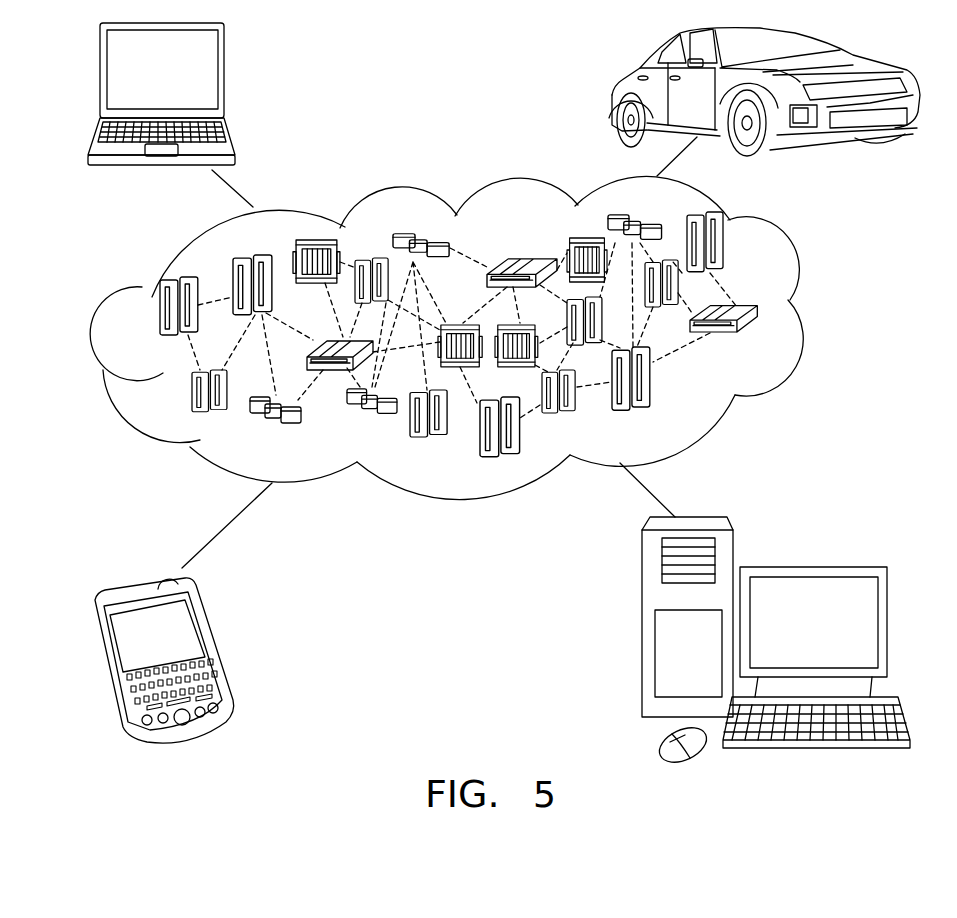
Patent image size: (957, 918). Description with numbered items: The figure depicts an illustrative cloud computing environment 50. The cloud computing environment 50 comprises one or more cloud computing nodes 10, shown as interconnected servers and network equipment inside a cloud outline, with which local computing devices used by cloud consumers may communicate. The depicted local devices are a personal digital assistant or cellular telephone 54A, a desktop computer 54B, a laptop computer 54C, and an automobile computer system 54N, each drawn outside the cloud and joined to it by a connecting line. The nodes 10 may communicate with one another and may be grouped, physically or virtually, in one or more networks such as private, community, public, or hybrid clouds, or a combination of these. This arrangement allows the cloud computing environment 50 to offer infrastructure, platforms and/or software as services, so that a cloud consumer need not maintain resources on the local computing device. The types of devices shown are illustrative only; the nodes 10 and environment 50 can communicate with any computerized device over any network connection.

The cloud computing node 10 is at (763, 343).
The cloud computing environment 50 is at (477, 337).
The personal digital assistant or cellular telephone 54A is at (217, 648).
The desktop computer 54B is at (810, 567).
The laptop computer 54C is at (223, 77).
The automobile computer system 54N is at (612, 90).